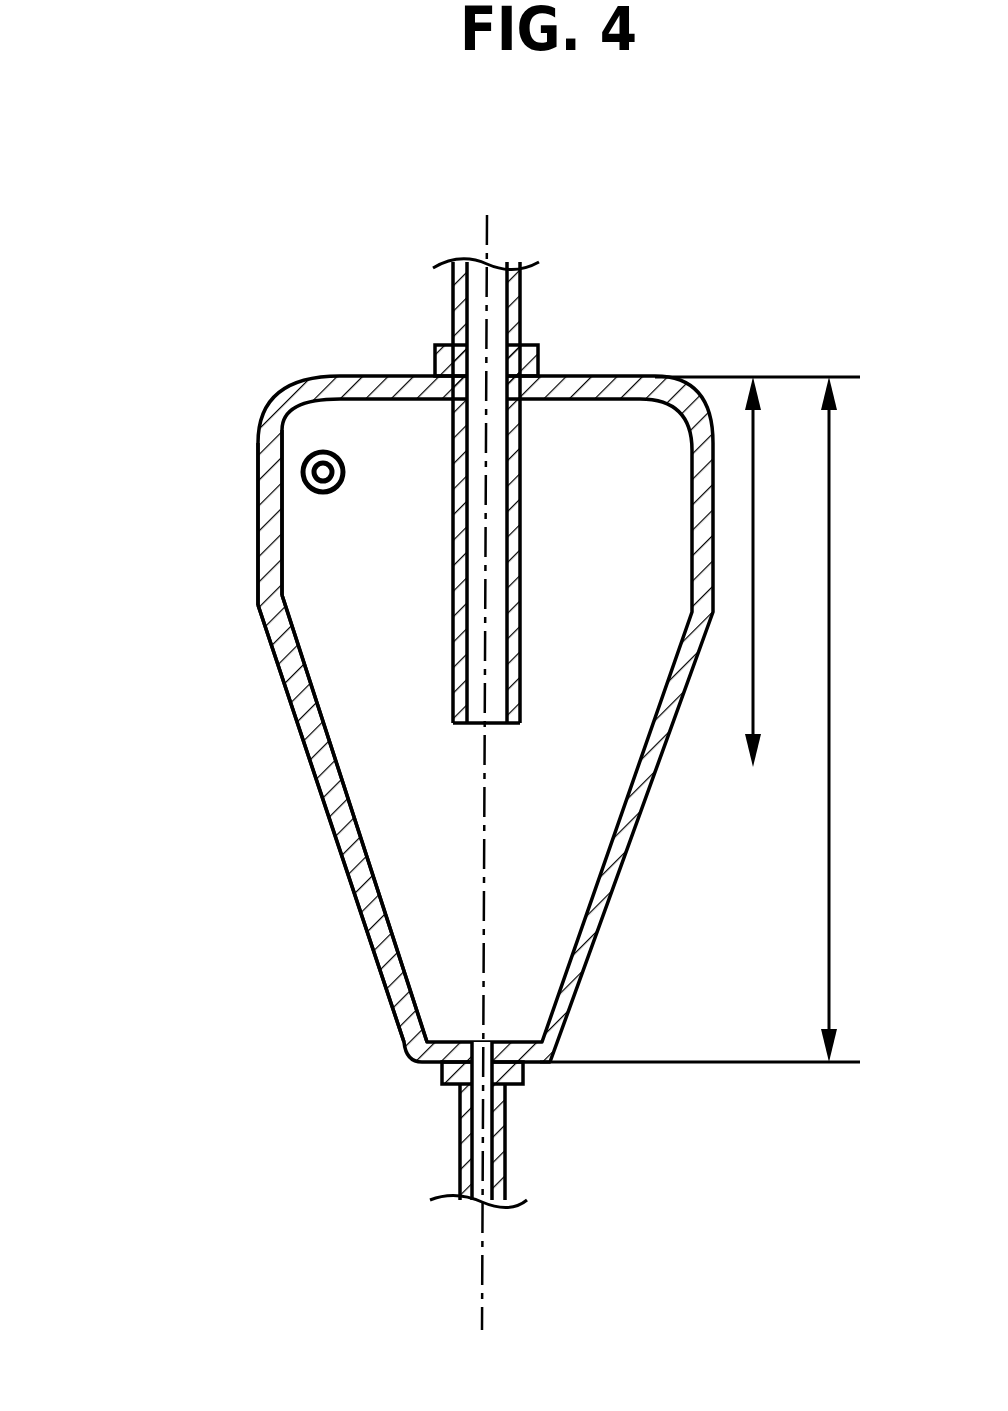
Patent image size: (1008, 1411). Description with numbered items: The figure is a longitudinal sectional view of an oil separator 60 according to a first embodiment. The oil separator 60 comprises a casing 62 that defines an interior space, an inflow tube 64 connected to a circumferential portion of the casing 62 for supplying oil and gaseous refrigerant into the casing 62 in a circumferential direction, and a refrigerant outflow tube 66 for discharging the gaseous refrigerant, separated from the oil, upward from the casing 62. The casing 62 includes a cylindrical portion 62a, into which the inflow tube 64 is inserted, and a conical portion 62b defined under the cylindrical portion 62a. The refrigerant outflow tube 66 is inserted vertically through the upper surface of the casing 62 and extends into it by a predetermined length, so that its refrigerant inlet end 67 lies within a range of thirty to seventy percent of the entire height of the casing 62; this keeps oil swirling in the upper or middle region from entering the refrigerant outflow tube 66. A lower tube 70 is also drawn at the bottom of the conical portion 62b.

The oil separator 60 is at (195, 350).
The casing 62 is at (125, 576).
The cylindrical portion 62a is at (258, 590).
The conical portion 62b is at (275, 657).
The inflow tube 64 is at (302, 468).
The refrigerant outflow tube 66 is at (453, 308).
The refrigerant inlet end 67 is at (482, 724).
The bottom discharge pipe 70 is at (505, 1135).